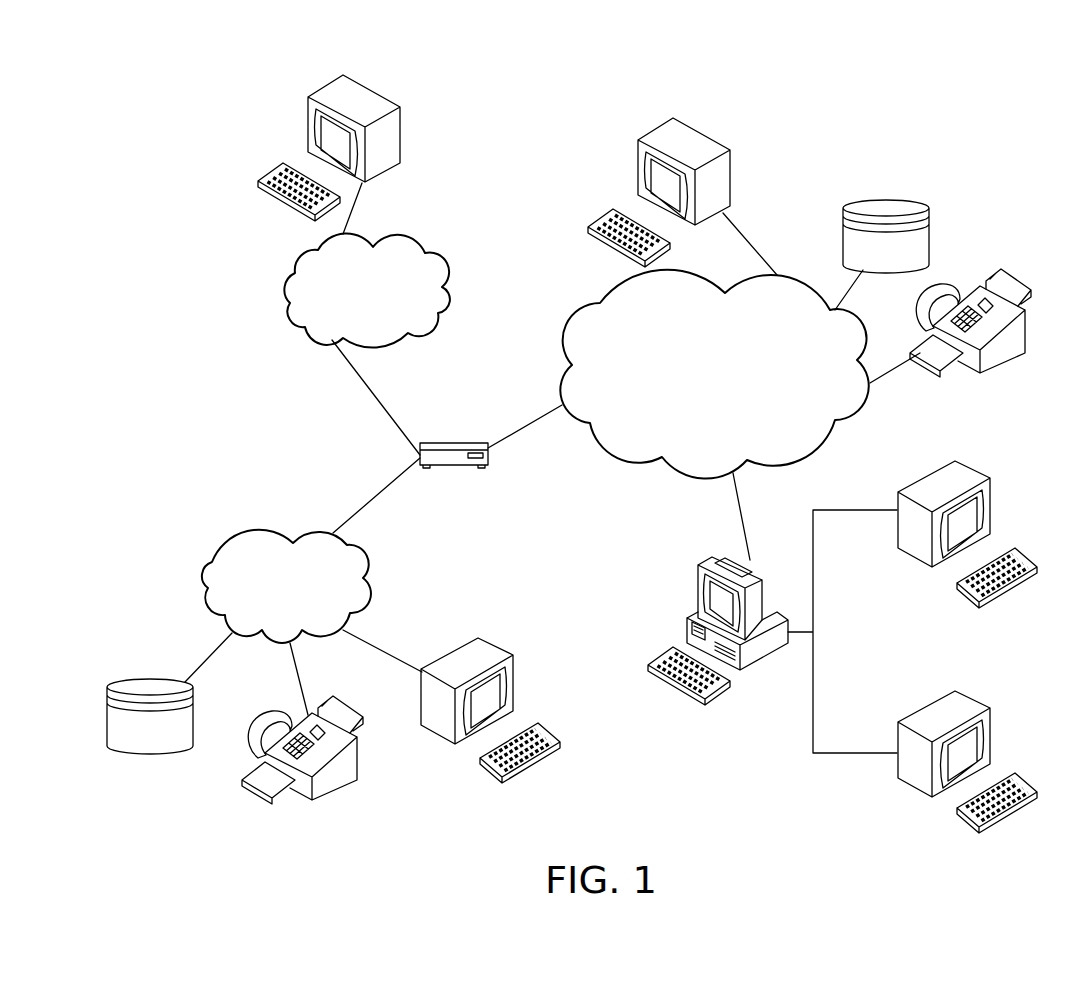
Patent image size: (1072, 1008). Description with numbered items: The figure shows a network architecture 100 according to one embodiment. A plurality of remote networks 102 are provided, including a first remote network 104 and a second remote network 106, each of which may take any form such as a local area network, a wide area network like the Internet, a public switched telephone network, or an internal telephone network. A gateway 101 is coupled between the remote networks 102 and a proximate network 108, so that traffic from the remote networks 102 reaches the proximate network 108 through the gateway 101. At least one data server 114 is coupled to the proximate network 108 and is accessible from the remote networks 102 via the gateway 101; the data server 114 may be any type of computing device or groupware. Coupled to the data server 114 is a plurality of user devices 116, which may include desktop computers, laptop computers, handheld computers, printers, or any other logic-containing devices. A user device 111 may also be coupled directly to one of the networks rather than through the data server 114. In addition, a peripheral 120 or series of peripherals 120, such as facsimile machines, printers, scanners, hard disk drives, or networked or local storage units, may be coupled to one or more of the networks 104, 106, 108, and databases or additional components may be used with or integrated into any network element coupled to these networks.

The network architecture 100 is at (828, 75).
The gateway 101 is at (445, 442).
The remote networks 102 is at (262, 378).
The first remote network 104 is at (208, 563).
The second remote network 106 is at (447, 270).
The proximate network 108 is at (837, 428).
The user device 111 is at (728, 153).
The data server 114 is at (698, 580).
The user devices 116 is at (402, 128).
The peripheral 120 is at (932, 217).